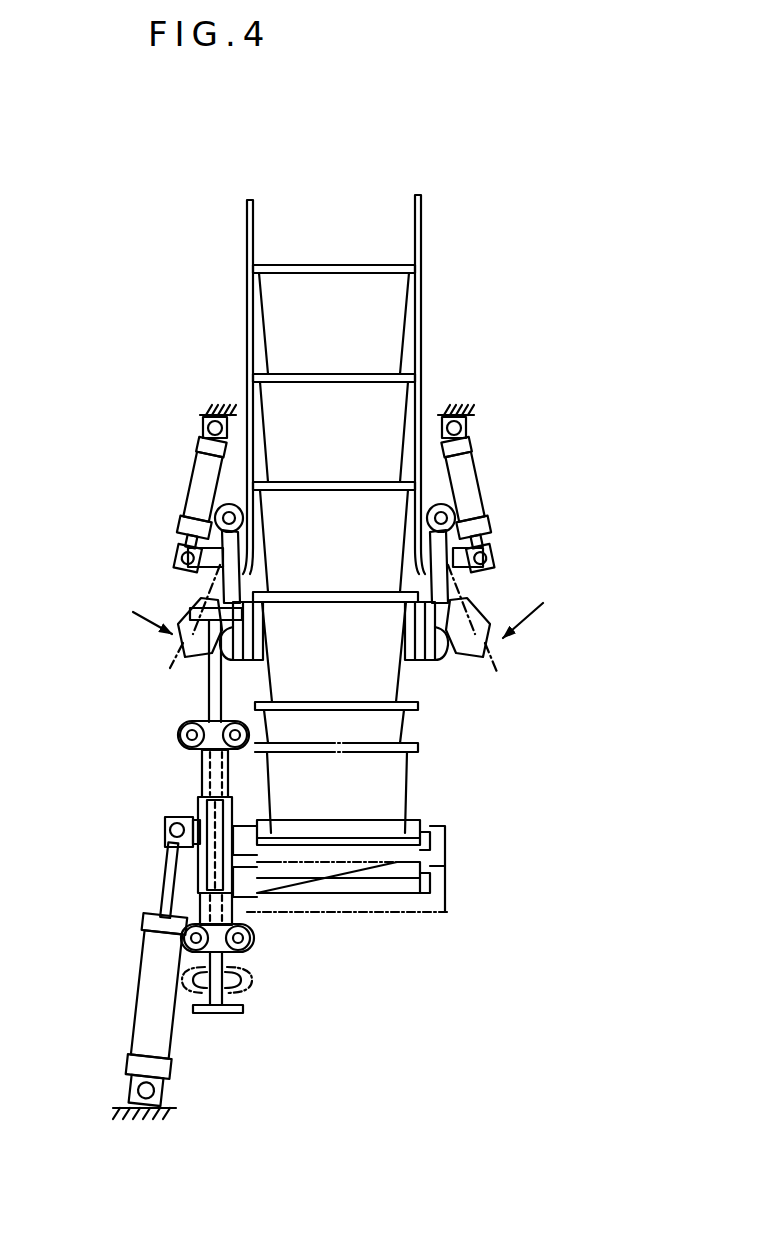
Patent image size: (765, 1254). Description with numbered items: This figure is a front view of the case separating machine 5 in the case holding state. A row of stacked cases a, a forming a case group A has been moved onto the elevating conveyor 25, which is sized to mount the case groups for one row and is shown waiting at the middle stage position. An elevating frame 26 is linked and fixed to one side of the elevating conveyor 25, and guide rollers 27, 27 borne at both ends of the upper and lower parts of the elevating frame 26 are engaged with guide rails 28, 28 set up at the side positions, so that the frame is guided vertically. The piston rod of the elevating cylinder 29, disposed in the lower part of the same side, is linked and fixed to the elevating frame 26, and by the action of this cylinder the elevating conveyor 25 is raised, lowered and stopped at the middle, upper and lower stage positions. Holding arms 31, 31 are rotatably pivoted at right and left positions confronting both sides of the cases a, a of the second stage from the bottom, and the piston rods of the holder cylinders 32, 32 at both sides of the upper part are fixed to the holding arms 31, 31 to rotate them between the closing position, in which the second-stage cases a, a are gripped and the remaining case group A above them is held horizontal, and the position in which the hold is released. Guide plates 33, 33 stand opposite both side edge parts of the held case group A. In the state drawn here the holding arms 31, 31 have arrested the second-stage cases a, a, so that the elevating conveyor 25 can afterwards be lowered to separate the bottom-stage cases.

The case separating machine 5 is at (483, 338).
The case group A is at (335, 258).
The guide plates 33 is at (247, 283).
The case a is at (272, 400).
The holder cylinders 32 is at (193, 470).
The holding arms 31 is at (233, 650).
The elevating conveyor 25 is at (449, 876).
The elevating frame 26 is at (198, 800).
The guide rollers 27 is at (222, 726).
The guide rails 28 is at (222, 1013).
The elevating cylinder 29 is at (152, 978).